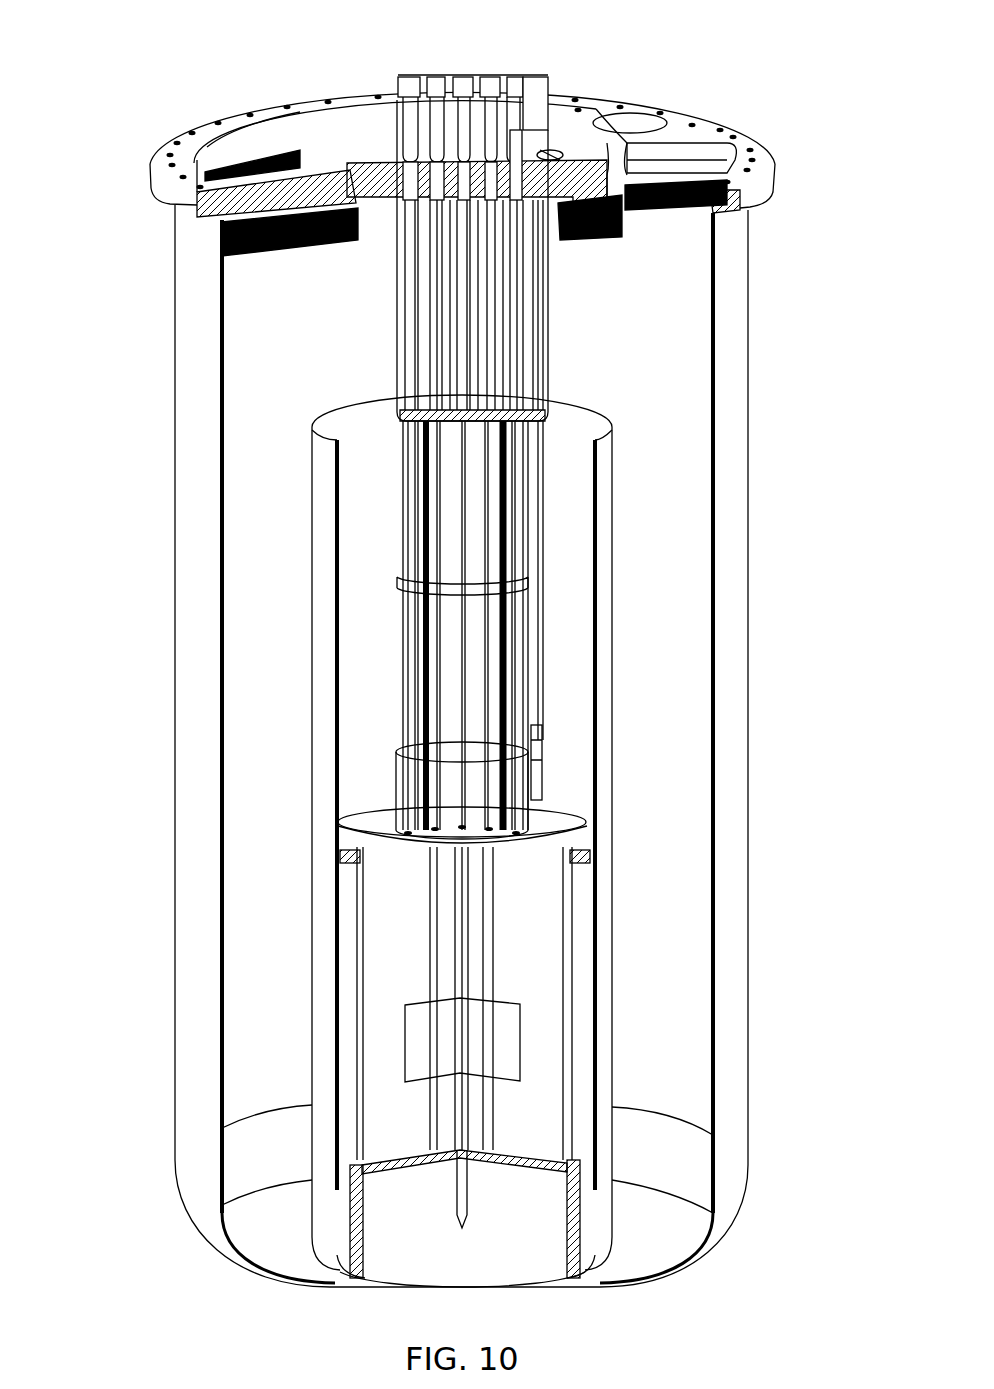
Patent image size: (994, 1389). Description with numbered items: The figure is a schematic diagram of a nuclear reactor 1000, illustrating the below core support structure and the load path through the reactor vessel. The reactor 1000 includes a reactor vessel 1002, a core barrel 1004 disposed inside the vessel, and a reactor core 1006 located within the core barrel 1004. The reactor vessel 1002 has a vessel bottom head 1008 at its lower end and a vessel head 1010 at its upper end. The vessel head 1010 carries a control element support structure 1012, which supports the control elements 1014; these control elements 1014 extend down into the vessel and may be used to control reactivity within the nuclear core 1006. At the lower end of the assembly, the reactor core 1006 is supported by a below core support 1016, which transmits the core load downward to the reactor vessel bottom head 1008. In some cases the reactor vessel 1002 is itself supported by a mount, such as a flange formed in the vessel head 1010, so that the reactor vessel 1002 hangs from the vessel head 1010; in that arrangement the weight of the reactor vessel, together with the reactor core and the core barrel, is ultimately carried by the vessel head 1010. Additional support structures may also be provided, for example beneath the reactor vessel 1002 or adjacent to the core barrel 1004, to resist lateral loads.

The nuclear reactor 1000 is at (630, 56).
The reactor vessel 1002 is at (733, 367).
The core barrel 1004 is at (608, 574).
The reactor core 1006 is at (484, 1039).
The vessel bottom head 1008 is at (666, 1266).
The vessel head 1010 is at (693, 130).
The control element support structure 1012 is at (533, 147).
The control elements 1014 is at (407, 108).
The below core support 1016 is at (329, 1228).